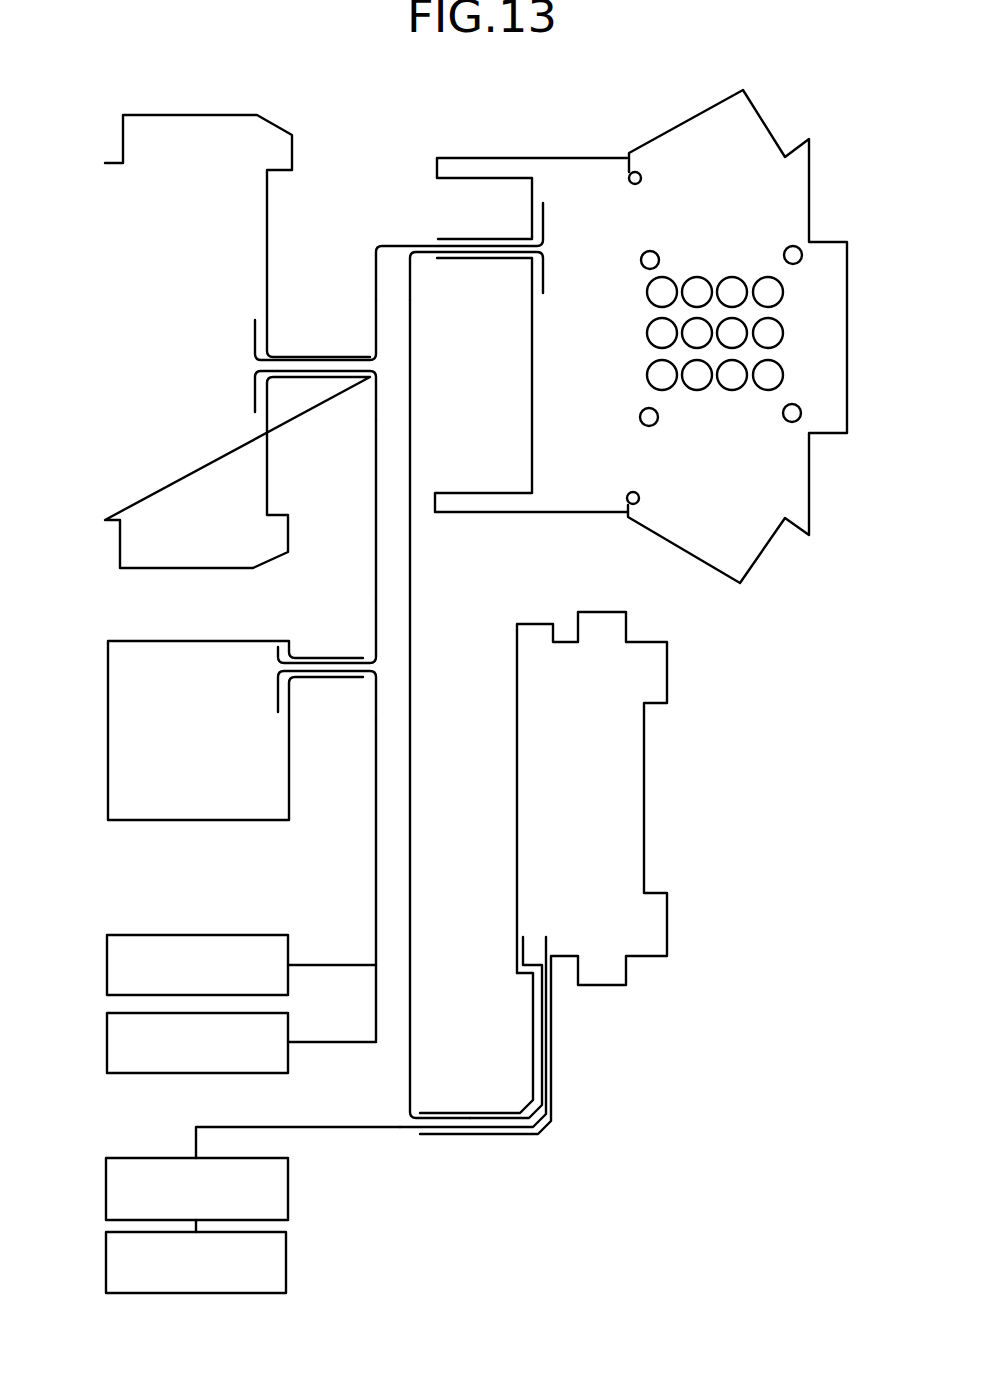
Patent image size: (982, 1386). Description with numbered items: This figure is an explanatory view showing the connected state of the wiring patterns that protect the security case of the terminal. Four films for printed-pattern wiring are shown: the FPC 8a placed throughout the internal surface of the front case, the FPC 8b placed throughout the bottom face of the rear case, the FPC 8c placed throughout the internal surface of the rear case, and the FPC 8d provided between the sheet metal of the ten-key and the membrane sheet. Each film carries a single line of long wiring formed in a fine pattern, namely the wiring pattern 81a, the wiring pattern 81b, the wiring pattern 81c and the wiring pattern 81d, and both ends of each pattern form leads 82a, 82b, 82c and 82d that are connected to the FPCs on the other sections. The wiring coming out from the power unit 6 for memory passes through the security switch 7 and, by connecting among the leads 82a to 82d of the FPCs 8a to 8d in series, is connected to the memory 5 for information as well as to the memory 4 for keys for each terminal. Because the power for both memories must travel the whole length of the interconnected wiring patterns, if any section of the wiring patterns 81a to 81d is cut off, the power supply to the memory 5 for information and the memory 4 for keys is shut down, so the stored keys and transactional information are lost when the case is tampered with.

The memory for keys 4 is at (107, 961).
The memory for information 5 is at (107, 1043).
The power unit for memory 6 is at (106, 1262).
The security switch 7 is at (106, 1190).
The FPC 8a is at (800, 212).
The FPC 8b is at (657, 678).
The FPC 8c is at (118, 237).
The FPC 8d is at (108, 692).
The wiring pattern 81a is at (545, 225).
The wiring pattern 81b is at (523, 945).
The wiring pattern 81c is at (270, 328).
The wiring pattern 81d is at (278, 648).
The leads 82a is at (480, 252).
The leads 82b is at (498, 1125).
The leads 82c is at (302, 367).
The leads 82d is at (335, 677).